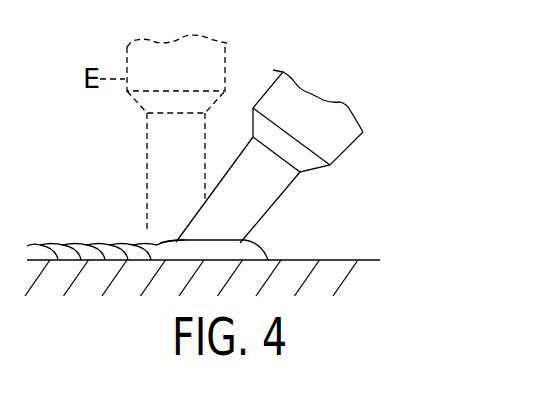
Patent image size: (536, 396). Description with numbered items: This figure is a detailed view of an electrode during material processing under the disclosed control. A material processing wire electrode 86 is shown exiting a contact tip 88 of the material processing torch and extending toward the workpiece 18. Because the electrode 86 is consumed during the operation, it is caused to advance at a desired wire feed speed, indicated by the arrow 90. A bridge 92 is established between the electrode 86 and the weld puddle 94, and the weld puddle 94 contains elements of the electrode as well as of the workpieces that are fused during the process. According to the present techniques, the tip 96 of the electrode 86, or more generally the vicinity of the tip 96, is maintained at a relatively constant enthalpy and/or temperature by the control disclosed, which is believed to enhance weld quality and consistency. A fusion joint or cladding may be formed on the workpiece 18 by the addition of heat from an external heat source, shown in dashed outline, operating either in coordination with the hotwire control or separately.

The workpiece 18 is at (363, 260).
The material processing wire electrode 86 is at (281, 195).
The contact tip 88 is at (330, 135).
The wire feed speed 90 is at (211, 169).
The bridge 92 is at (45, 245).
The weld puddle 94 is at (167, 243).
The tip 96 is at (193, 232).